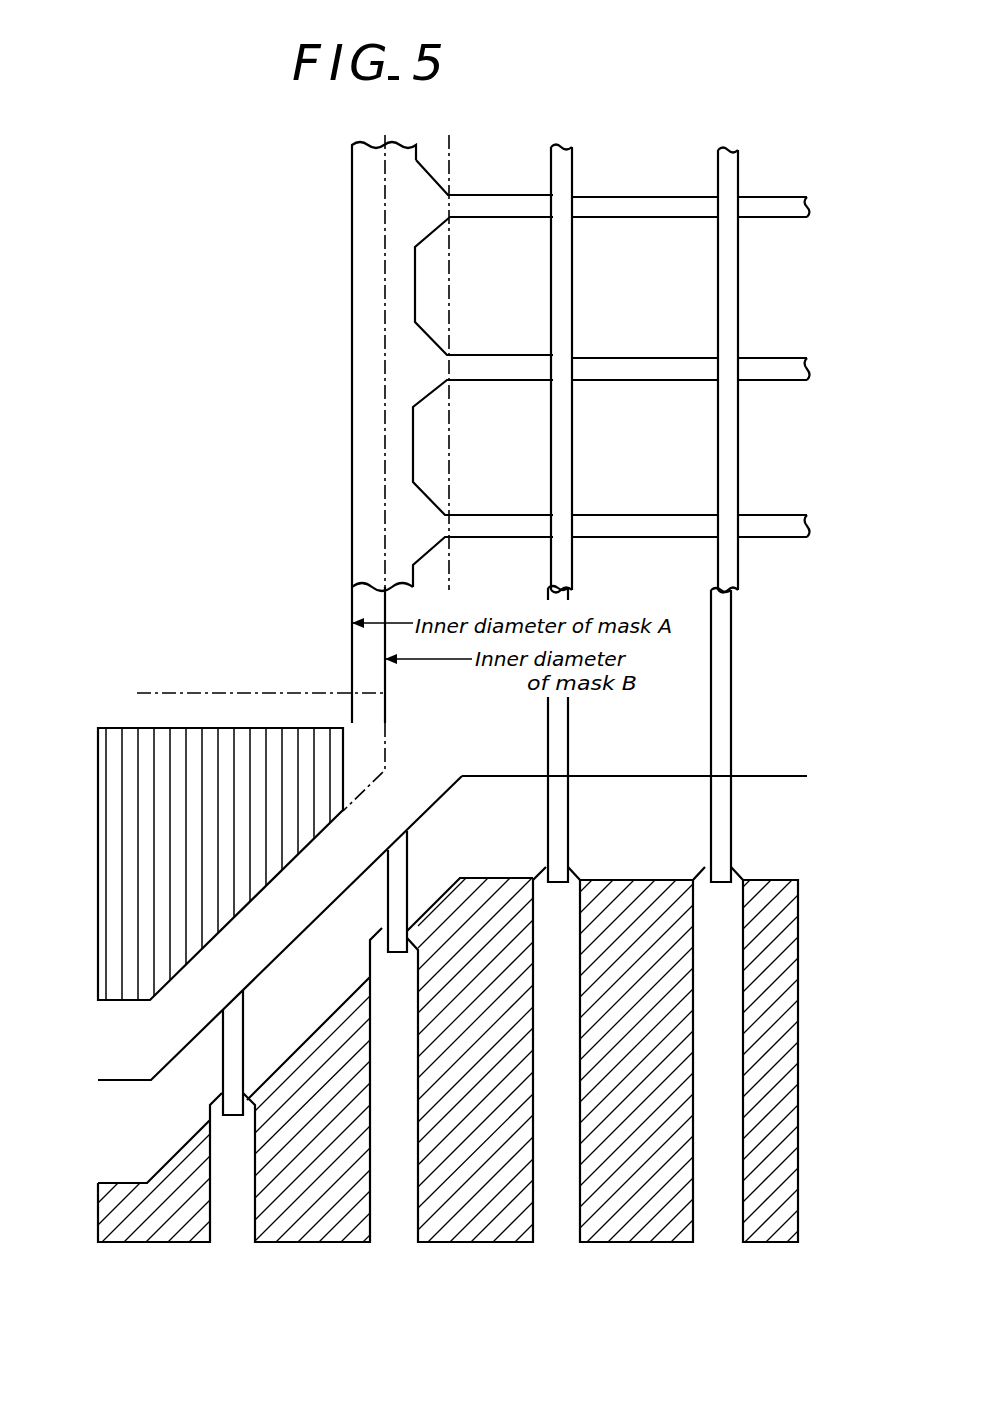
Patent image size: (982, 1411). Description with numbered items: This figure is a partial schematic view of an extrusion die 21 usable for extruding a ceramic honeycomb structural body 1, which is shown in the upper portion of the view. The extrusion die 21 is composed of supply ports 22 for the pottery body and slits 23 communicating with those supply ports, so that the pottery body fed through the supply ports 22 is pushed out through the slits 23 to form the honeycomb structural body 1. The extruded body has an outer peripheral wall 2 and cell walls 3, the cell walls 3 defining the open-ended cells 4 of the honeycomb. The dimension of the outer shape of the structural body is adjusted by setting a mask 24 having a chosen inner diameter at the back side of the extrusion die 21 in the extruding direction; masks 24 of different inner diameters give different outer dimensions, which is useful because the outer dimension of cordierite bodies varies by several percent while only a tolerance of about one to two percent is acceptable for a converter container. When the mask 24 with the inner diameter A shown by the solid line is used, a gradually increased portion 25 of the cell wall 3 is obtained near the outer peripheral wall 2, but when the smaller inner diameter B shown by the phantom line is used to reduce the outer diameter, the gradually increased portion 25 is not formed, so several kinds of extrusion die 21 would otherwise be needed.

The ceramic honeycomb structural body 1 is at (701, 369).
The outer peripheral wall 2 is at (354, 289).
The cell wall 3 is at (730, 414).
The open-ended cell 4 is at (700, 296).
The extrusion die 21 is at (486, 914).
The supply port 22 is at (724, 1069).
The slit 23 is at (727, 828).
The mask 24 is at (128, 789).
The gradually increased portion 25 is at (425, 185).